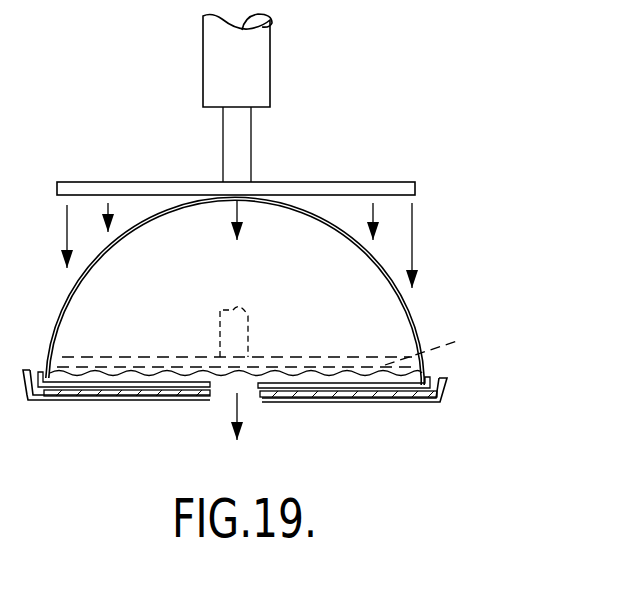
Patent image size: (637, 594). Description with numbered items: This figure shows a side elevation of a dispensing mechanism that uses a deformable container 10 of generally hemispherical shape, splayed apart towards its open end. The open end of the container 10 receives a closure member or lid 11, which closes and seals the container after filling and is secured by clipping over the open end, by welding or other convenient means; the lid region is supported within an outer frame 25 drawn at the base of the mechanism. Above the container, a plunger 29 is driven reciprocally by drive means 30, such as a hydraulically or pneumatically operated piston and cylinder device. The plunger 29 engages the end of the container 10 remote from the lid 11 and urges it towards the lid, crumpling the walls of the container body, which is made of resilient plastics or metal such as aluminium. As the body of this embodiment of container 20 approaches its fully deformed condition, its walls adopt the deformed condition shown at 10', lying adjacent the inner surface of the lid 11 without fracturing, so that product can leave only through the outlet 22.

The drive means 30 is at (250, 145).
The plunger 29 is at (358, 190).
The container 10 is at (261, 291).
The deformed condition of container 10' is at (236, 419).
The closure member 11 is at (336, 389).
The container 20 is at (388, 396).
The outer frame 25 is at (440, 402).
The outlet 22 is at (225, 393).